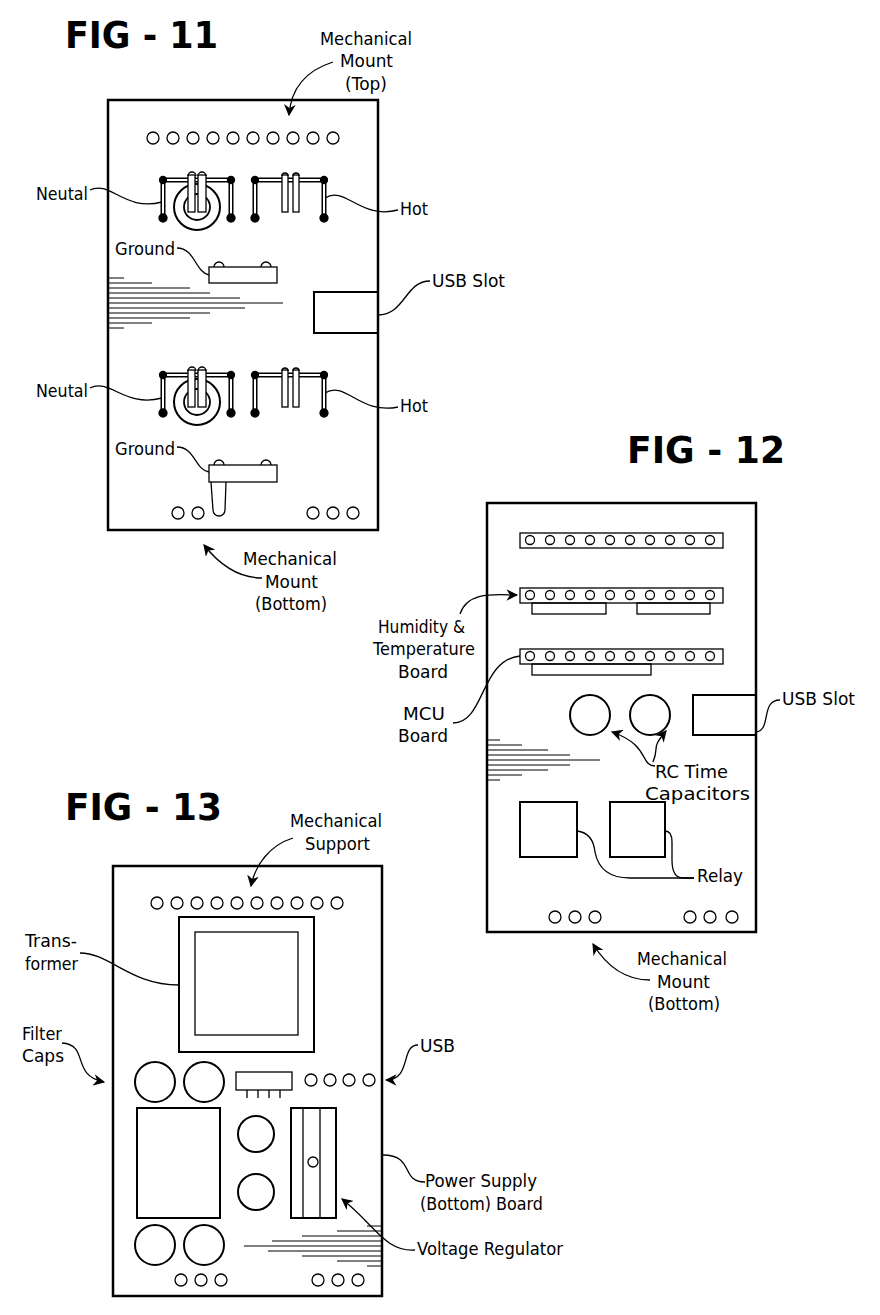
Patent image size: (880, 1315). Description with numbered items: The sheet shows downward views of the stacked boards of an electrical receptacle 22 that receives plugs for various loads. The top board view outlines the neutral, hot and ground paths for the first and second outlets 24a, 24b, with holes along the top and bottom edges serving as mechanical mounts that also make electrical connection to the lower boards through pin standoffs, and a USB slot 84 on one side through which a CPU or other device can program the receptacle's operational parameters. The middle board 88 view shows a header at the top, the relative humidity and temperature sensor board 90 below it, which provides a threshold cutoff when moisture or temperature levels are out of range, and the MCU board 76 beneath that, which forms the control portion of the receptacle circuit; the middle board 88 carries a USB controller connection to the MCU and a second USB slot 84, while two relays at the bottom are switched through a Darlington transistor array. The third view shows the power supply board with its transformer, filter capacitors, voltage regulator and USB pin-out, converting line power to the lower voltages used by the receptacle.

In FIG. 11, the first outlet 24a is at (70, 143).
In FIG. 11, the second outlet 24b is at (88, 314).
In FIG. 11, the USB slot 84 is at (370, 303).
In FIG. 12, the USB slot 84 is at (735, 721).
In FIG. 12, the electrical receptacle 22 is at (468, 573).
In FIG. 12, the relative humidity and temperature sensor board 90 is at (723, 596).
In FIG. 12, the MCU board 76 is at (723, 657).
In FIG. 12, the middle board 88 is at (488, 835).